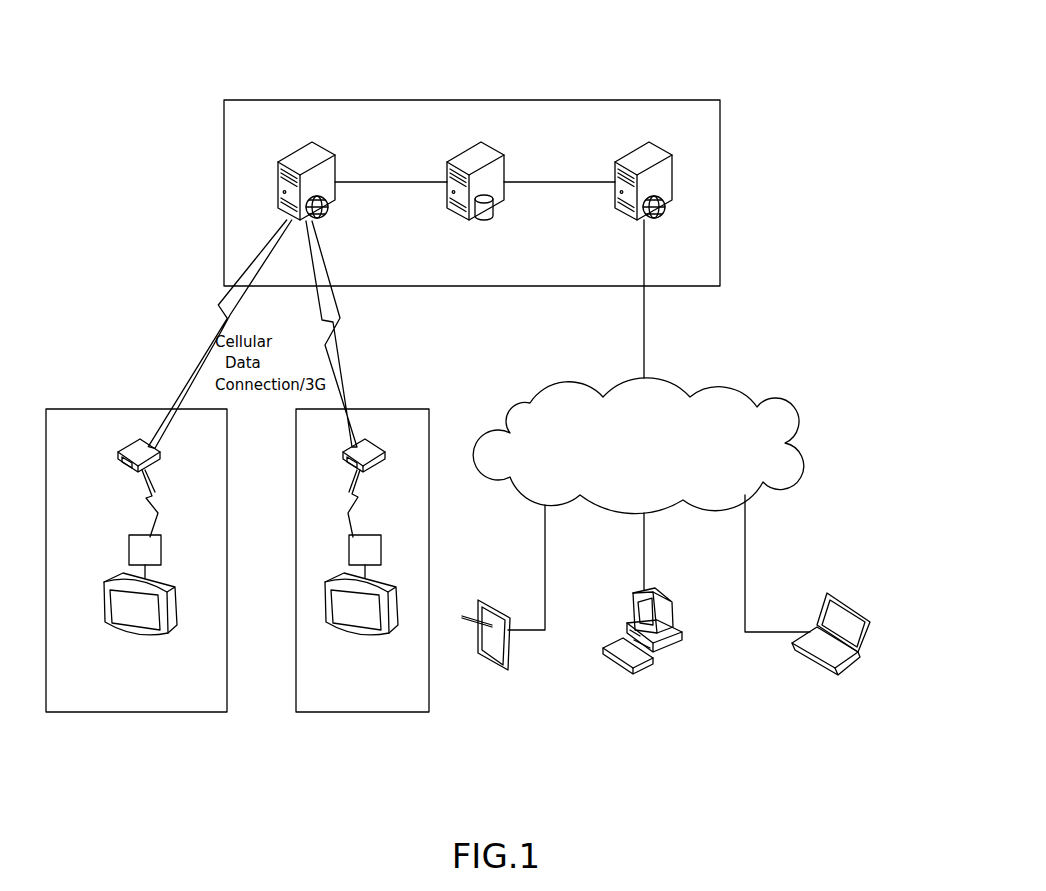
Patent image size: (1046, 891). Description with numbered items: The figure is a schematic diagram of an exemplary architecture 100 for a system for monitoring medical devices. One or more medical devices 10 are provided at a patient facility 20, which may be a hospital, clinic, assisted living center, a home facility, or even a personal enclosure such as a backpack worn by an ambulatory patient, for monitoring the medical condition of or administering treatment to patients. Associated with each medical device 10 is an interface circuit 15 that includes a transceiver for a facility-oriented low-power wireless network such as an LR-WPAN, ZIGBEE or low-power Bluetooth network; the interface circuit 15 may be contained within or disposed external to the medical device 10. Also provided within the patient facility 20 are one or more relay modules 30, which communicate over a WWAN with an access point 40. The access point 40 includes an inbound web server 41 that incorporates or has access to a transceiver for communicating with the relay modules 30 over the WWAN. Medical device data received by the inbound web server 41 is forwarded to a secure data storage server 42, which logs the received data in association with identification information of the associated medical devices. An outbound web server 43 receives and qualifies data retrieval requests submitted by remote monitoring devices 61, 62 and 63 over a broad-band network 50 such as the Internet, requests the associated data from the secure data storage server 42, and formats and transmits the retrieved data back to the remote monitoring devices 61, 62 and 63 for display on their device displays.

The architecture 100 is at (174, 43).
The medical device 10 is at (178, 606).
The interface circuit 15 is at (255, 556).
The patient facility 20 is at (101, 409).
The relay module 30 is at (153, 448).
The access point 40 is at (583, 100).
The inbound web server 41 is at (302, 160).
The secure data storage server 42 is at (447, 197).
The outbound web server 43 is at (673, 182).
The broad-band network 50 is at (718, 385).
The remote monitoring device 61 is at (670, 645).
The remote monitoring device 62 is at (490, 658).
The remote monitoring device 63 is at (847, 668).